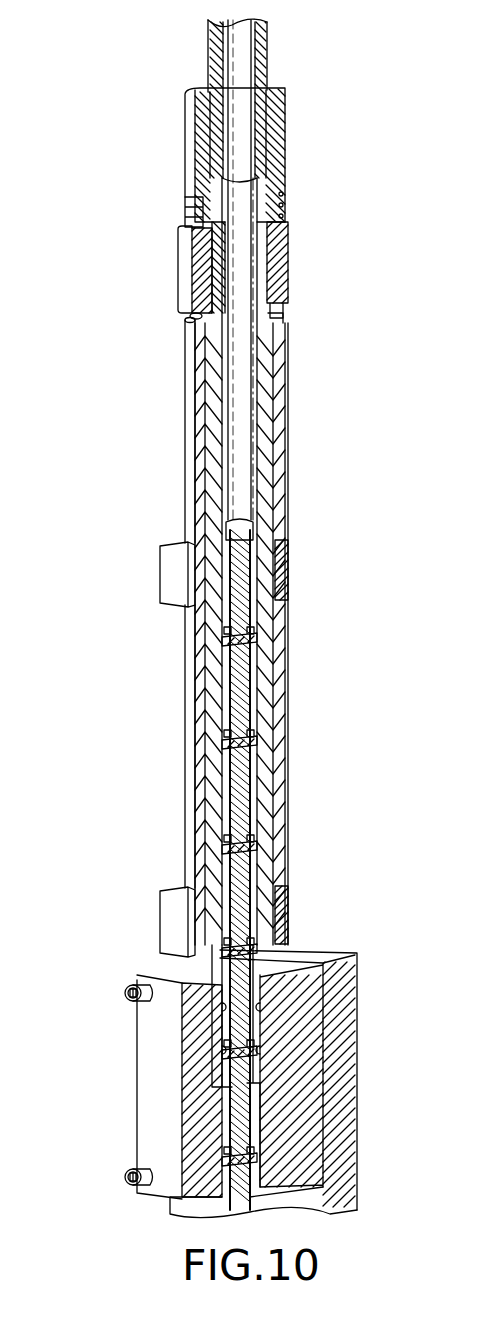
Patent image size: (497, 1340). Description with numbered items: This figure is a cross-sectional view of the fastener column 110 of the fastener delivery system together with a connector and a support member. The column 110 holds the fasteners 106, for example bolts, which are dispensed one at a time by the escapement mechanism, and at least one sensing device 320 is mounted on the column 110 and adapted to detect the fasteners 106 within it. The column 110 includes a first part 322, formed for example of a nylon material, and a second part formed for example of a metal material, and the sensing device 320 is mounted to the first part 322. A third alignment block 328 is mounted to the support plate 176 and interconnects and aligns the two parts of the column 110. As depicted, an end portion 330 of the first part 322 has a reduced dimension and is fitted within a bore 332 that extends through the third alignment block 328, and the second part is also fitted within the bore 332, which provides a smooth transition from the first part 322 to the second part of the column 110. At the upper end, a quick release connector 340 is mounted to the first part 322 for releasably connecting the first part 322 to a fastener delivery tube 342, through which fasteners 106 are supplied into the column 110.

The fastener delivery tube 342 is at (265, 58).
The quick release connector 340 is at (302, 169).
The first part 322 is at (185, 445).
The column 110 is at (302, 489).
The sensing device 320 is at (162, 583).
The fasteners 106 is at (252, 677).
The support plate 176 is at (355, 1010).
The end portion 330 is at (225, 1040).
The bore 332 is at (255, 1120).
The third alignment block 328 is at (137, 1093).